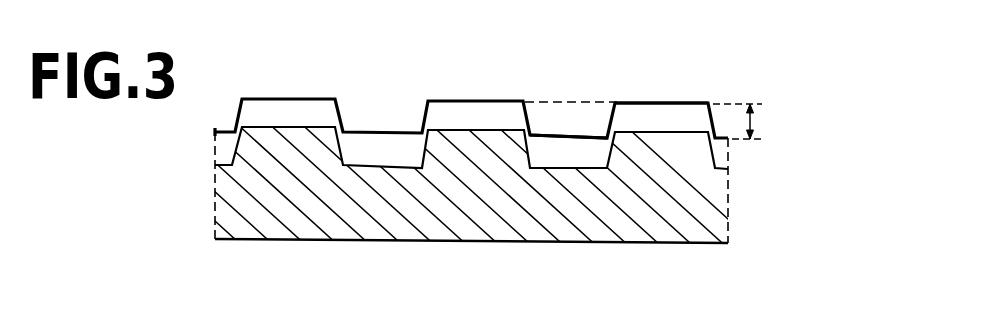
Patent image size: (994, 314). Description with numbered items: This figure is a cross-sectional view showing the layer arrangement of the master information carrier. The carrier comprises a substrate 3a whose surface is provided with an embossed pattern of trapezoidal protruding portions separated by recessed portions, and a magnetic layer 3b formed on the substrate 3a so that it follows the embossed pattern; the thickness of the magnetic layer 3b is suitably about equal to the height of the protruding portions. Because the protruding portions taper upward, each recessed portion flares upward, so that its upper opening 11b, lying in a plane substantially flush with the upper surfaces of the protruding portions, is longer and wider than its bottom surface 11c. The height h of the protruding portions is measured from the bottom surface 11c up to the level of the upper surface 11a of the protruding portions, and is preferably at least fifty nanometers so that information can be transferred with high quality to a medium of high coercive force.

The substrate 3a is at (722, 205).
The magnetic layer 3b is at (722, 158).
The top portion of convex part 11a is at (638, 102).
The upper opening 11b is at (572, 100).
The bottom surface 11c is at (558, 135).
The height h is at (752, 121).